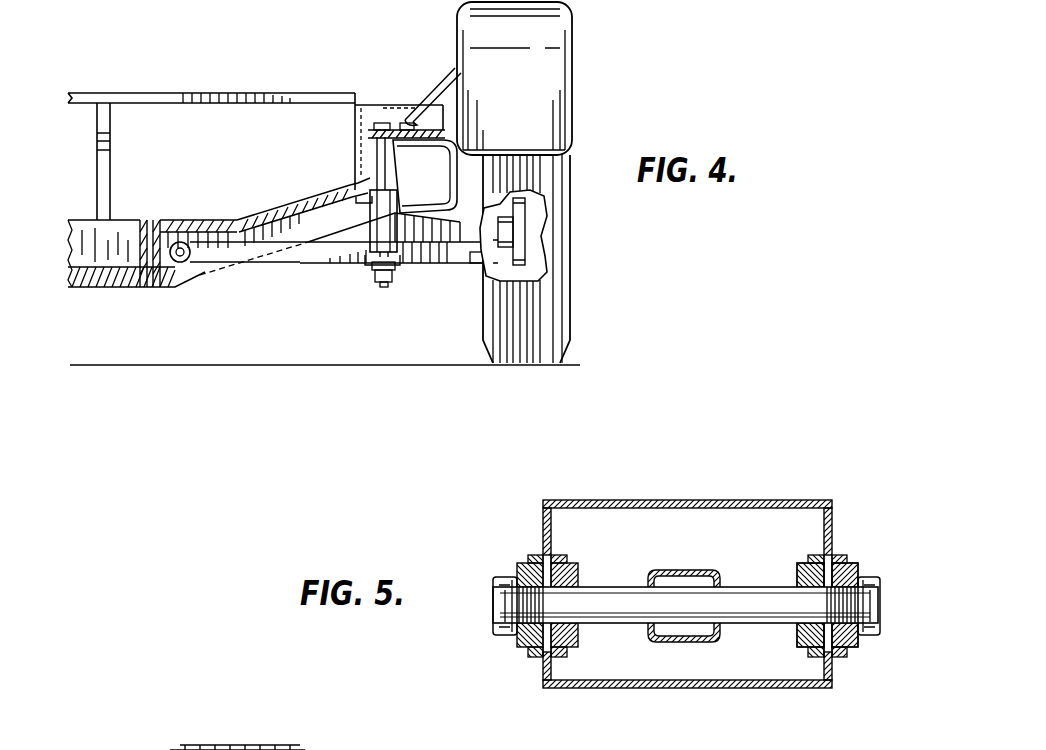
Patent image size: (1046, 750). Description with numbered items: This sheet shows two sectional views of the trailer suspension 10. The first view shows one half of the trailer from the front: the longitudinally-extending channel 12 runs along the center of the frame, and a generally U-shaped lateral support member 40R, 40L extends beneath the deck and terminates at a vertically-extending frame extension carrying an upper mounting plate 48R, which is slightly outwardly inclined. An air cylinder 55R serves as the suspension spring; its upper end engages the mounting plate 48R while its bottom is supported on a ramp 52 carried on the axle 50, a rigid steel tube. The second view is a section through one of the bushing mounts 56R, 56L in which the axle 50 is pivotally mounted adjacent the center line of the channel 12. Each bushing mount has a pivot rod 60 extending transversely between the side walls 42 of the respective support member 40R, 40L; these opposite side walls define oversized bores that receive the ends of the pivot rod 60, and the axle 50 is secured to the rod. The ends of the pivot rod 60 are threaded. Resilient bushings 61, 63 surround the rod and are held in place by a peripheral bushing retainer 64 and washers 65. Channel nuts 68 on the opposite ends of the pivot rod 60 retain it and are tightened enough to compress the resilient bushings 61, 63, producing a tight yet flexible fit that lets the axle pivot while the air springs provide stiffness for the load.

In FIG. 4, the suspension assembly 10 is at (269, 66).
In FIG. 4, the longitudinally-extending channel 12 is at (145, 243).
In FIG. 4, the upper mounting plate 48R is at (426, 114).
In FIG. 4, the air cylinder 55R is at (375, 162).
In FIG. 4, the ramp 52 is at (442, 240).
In FIG. 5, the bushing mount 56R is at (669, 583).
In FIG. 5, the bushing mount 56L is at (669, 583).
In FIG. 5, the side walls 42 is at (661, 600).
In FIG. 5, the lateral support member 40R is at (623, 613).
In FIG. 5, the lateral support member 40L is at (541, 668).
In FIG. 5, the peripheral bushing retainer 64 is at (838, 556).
In FIG. 5, the resilient bushing 61 is at (797, 584).
In FIG. 5, the resilient bushing 63 is at (860, 574).
In FIG. 5, the washers 65 is at (862, 641).
In FIG. 5, the channel nuts 68 is at (498, 578).
In FIG. 5, the axle 50 is at (681, 571).
In FIG. 5, the pivot rod 60 is at (640, 602).